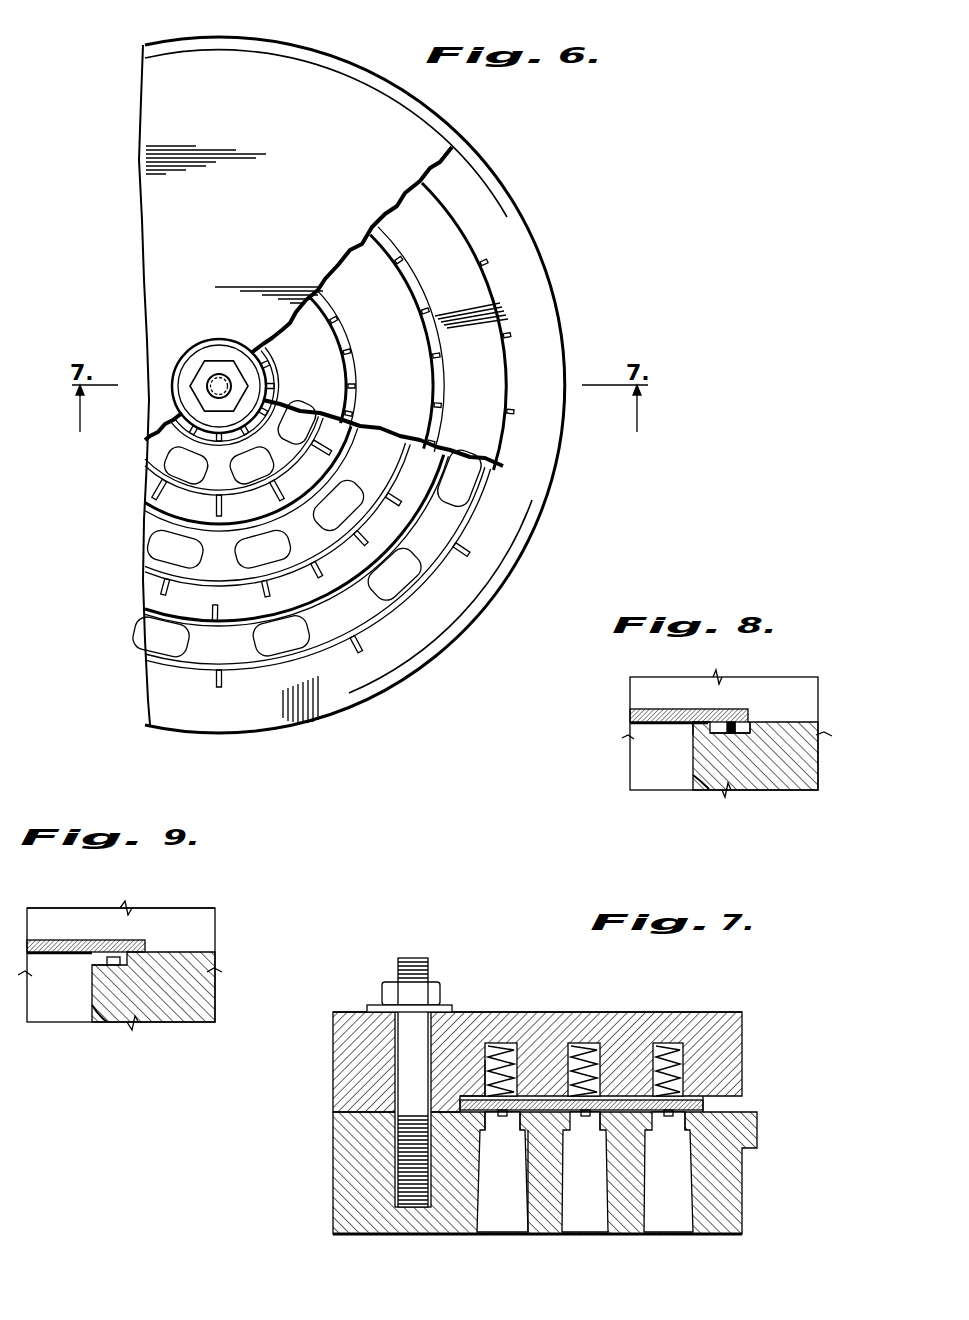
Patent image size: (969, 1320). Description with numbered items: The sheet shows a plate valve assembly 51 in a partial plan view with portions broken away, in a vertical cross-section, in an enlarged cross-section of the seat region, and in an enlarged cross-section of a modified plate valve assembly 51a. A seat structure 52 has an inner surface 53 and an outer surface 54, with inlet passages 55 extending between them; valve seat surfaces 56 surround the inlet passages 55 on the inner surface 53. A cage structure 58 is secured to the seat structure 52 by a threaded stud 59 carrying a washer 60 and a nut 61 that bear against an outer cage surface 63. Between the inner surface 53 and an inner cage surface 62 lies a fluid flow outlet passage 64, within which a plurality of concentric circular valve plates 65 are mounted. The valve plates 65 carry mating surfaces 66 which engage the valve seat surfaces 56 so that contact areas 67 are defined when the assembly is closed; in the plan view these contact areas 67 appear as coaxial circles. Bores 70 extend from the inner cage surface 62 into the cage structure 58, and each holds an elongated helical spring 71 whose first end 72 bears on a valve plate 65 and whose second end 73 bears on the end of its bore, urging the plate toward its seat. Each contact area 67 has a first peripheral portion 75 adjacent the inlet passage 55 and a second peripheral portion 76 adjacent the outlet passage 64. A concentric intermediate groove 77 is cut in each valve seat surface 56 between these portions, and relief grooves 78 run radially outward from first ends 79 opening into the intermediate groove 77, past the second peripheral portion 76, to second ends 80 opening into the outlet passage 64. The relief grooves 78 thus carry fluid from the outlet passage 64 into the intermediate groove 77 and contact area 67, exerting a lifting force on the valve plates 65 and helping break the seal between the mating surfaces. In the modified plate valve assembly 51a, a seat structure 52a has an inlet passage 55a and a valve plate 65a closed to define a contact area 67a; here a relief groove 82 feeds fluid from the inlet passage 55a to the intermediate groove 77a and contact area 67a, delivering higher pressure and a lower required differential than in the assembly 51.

In FIG. 6, the plate valve assembly 51 is at (506, 182).
In FIG. 7, the plate valve assembly 51 is at (608, 1005).
In FIG. 9, the modified plate valve assembly 51a is at (219, 896).
In FIG. 6, the seat structure 52 is at (543, 258).
In FIG. 8, the seat structure 52 is at (817, 791).
In FIG. 7, the seat structure 52 is at (757, 1135).
In FIG. 9, the seat structure 52a is at (215, 1013).
In FIG. 6, the inner surface 53 is at (354, 678).
In FIG. 7, the inner surface 53 is at (730, 1090).
In FIG. 7, the outer surface 54 is at (380, 1235).
In FIG. 6, the inlet passages 55 is at (276, 480).
In FIG. 8, the inlet passages 55 is at (691, 776).
In FIG. 7, the inlet passages 55 is at (556, 1217).
In FIG. 9, the inlet passage 55a is at (92, 1000).
In FIG. 6, the valve seat surfaces 56 is at (470, 508).
In FIG. 7, the valve seat surfaces 56 is at (525, 1143).
In FIG. 6, the cage structure 58 is at (251, 48).
In FIG. 7, the cage structure 58 is at (742, 1012).
In FIG. 6, the threaded stud 59 is at (207, 380).
In FIG. 7, the threaded stud 59 is at (398, 962).
In FIG. 6, the washer 60 is at (193, 348).
In FIG. 7, the washer 60 is at (452, 1008).
In FIG. 6, the nut 61 is at (224, 363).
In FIG. 7, the nut 61 is at (382, 992).
In FIG. 7, the inner cage surface 62 is at (643, 1097).
In FIG. 6, the outer cage surface 63 is at (326, 306).
In FIG. 7, the outer cage surface 63 is at (535, 1012).
In FIG. 7, the fluid flow outlet passage 64 is at (745, 1102).
In FIG. 6, the valve plates 65 is at (412, 283).
In FIG. 8, the valve plates 65 is at (701, 708).
In FIG. 7, the valve plates 65 is at (552, 1085).
In FIG. 9, the valve plate 65a is at (104, 940).
In FIG. 7, the mating surfaces 66 is at (432, 1135).
In FIG. 6, the contact areas 67 is at (320, 456).
In FIG. 8, the contact areas 67 is at (693, 723).
In FIG. 7, the contact areas 67 is at (520, 1118).
In FIG. 9, the contact area 67a is at (143, 955).
In FIG. 7, the bores 70 is at (517, 1053).
In FIG. 7, the elongated helical spring 71 is at (485, 1067).
In FIG. 7, the first end 72 is at (482, 1095).
In FIG. 7, the second end 73 is at (490, 1043).
In FIG. 6, the first peripheral portion 75 is at (399, 452).
In FIG. 8, the first peripheral portion 75 is at (695, 723).
In FIG. 7, the first peripheral portion 75 is at (507, 1115).
In FIG. 6, the second peripheral portion 76 is at (418, 453).
In FIG. 8, the second peripheral portion 76 is at (747, 720).
In FIG. 7, the second peripheral portion 76 is at (470, 1113).
In FIG. 6, the intermediate groove 77 is at (365, 520).
In FIG. 8, the intermediate groove 77 is at (717, 734).
In FIG. 7, the intermediate groove 77 is at (612, 1123).
In FIG. 9, the intermediate groove 77a is at (113, 965).
In FIG. 6, the relief grooves 78 is at (366, 538).
In FIG. 8, the relief grooves 78 is at (732, 721).
In FIG. 7, the relief grooves 78 is at (615, 1115).
In FIG. 6, the first ends 79 is at (302, 482).
In FIG. 8, the first ends 79 is at (740, 733).
In FIG. 7, the first ends 79 is at (700, 1118).
In FIG. 6, the second ends 80 is at (320, 490).
In FIG. 8, the second ends 80 is at (753, 728).
In FIG. 7, the second ends 80 is at (695, 1125).
In FIG. 9, the relief groove 82 is at (113, 953).